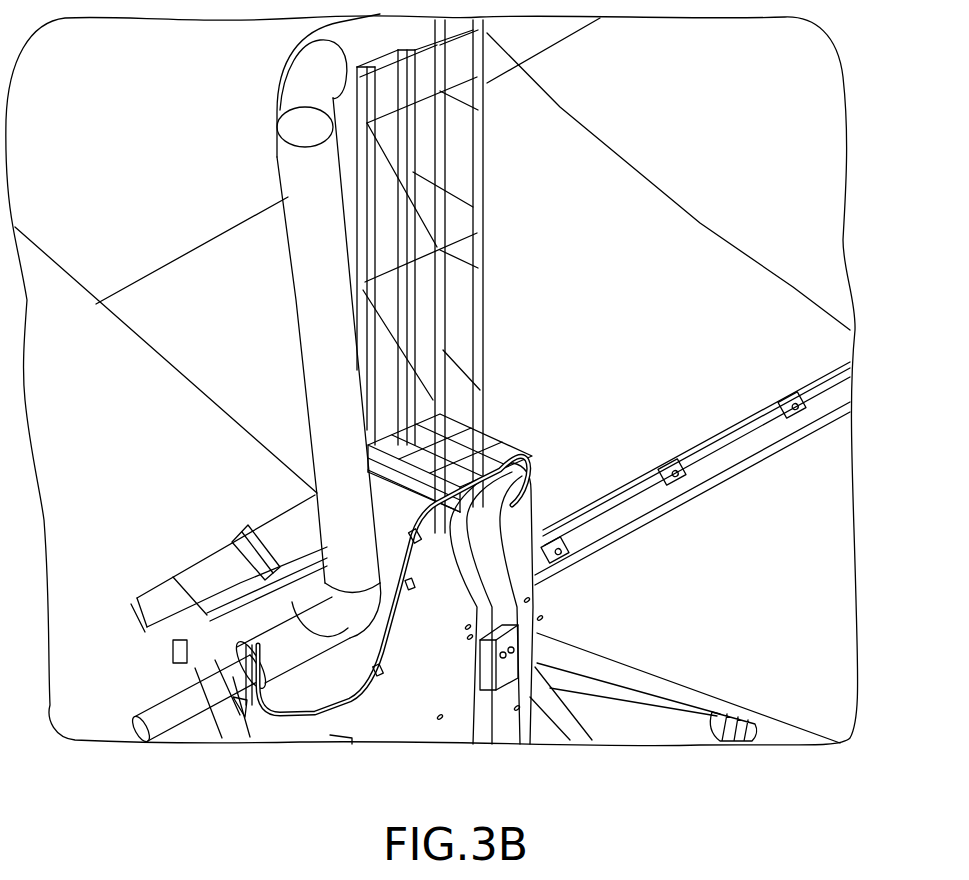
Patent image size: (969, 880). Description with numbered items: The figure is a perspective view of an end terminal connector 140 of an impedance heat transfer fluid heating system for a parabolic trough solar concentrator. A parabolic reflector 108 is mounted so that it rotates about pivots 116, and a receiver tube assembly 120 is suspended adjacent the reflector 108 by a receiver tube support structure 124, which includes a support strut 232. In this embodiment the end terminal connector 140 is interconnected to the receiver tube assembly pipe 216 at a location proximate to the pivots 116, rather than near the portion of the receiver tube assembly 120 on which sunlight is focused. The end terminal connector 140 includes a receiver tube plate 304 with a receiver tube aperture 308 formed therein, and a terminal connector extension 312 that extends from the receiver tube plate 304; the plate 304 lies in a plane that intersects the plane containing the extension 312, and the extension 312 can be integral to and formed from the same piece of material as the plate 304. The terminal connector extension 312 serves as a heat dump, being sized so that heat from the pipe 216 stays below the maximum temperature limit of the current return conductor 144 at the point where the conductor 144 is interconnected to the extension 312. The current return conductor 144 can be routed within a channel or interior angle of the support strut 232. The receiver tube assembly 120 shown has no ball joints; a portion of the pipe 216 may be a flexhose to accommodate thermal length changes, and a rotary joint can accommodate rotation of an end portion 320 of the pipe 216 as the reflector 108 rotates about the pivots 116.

The reflector 108 is at (180, 382).
The receiver tube assembly 120 is at (310, 363).
The receiver tube support structure 124 is at (483, 308).
The support strut 232 is at (483, 378).
The pivots 116 is at (512, 567).
The receiver tube plate 304 is at (197, 665).
The receiver tube assembly pipe 216 is at (165, 732).
The end or portion of the pipe 320 is at (153, 737).
The end terminal connector 140 is at (235, 725).
The receiver tube aperture 308 is at (253, 722).
The terminal connector extension 312 is at (270, 717).
The current return conductor 144 is at (348, 740).